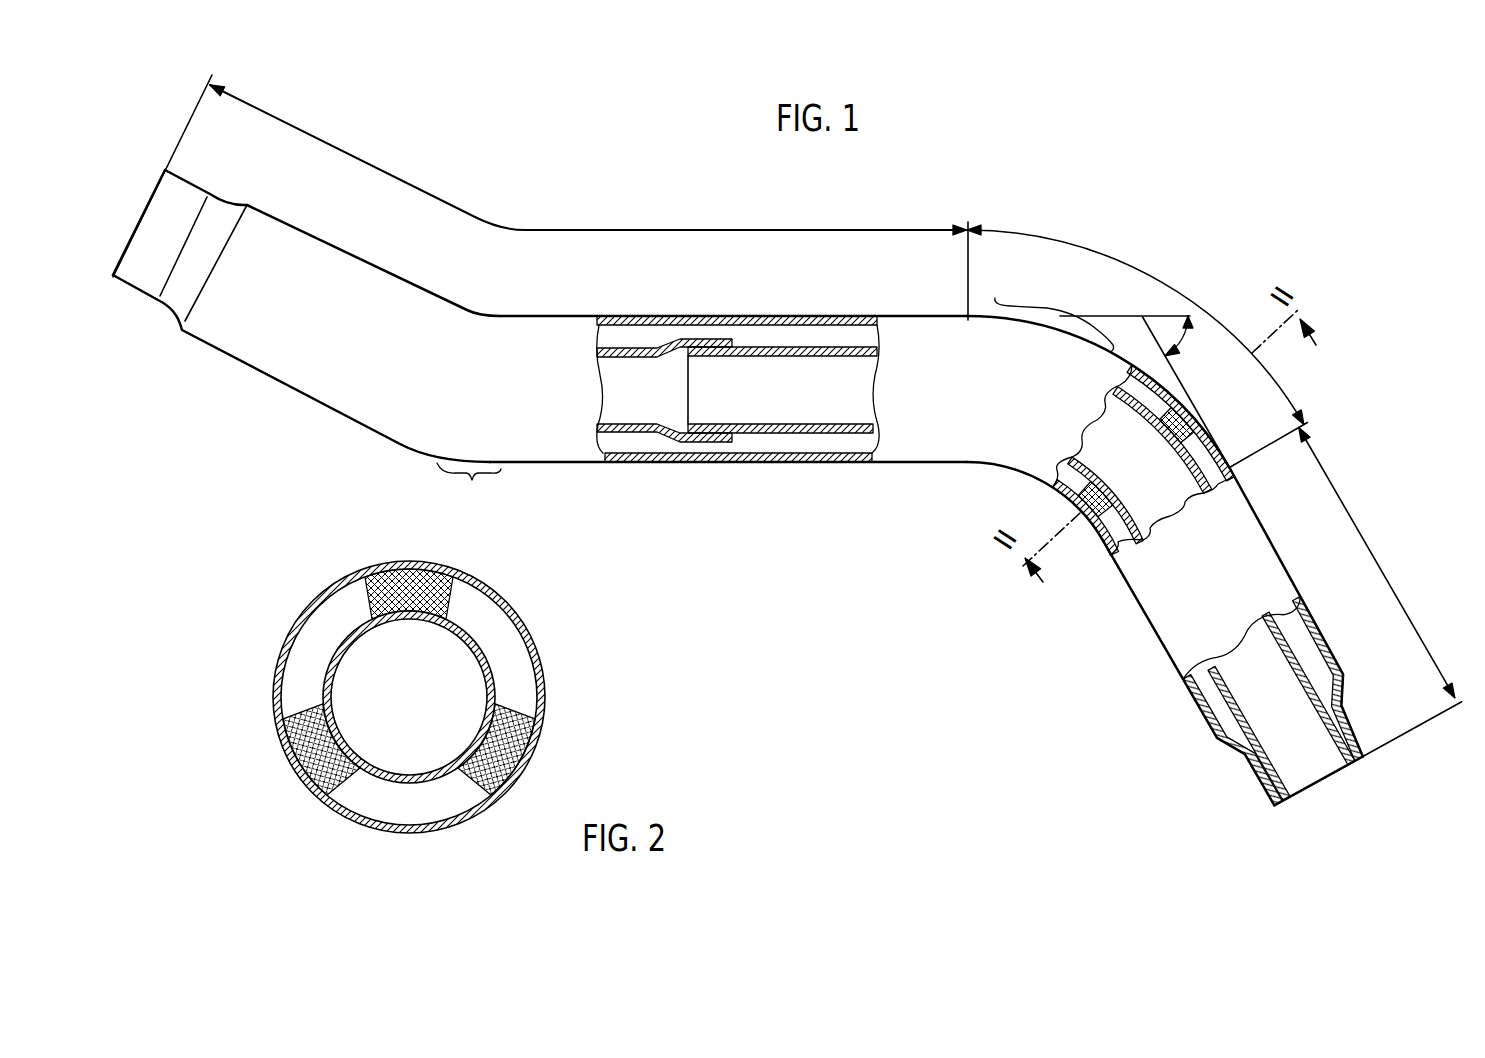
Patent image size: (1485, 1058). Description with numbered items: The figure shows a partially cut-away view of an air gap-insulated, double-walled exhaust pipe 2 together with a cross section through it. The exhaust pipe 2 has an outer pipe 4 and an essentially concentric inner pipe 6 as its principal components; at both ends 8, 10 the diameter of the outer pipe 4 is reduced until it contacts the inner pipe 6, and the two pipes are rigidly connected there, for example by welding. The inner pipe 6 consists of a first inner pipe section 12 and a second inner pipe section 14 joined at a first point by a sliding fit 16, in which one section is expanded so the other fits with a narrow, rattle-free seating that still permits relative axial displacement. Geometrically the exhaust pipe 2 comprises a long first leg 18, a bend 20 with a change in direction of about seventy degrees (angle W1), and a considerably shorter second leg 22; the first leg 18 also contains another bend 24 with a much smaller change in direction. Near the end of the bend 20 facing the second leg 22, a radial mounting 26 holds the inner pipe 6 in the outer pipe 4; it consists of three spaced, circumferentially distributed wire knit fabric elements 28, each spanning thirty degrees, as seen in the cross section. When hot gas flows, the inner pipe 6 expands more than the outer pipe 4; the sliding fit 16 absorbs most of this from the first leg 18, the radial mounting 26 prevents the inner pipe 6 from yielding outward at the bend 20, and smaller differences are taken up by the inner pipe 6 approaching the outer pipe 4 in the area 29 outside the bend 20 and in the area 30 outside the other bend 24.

In FIG. 1, the exhaust pipe 2 is at (918, 283).
In FIG. 1, the outer pipe 4 is at (800, 316).
In FIG. 2, the outer pipe 4 is at (543, 661).
In FIG. 1, the inner pipe 6 is at (841, 448).
In FIG. 2, the inner pipe 6 is at (480, 648).
In FIG. 1, the exhaust pipe end 8 is at (200, 170).
In FIG. 1, the exhaust pipe end 10 is at (1249, 795).
In FIG. 1, the first inner pipe section 12 is at (627, 434).
In FIG. 1, the second inner pipe section 14 is at (767, 434).
In FIG. 1, the sliding fit 16 is at (696, 327).
In FIG. 1, the first leg 18 is at (724, 230).
In FIG. 1, the bend 20 is at (1153, 277).
In FIG. 1, the second leg 22 is at (1374, 558).
In FIG. 1, the other bend 24 is at (418, 452).
In FIG. 1, the radial mounting 26 is at (1079, 528).
In FIG. 2, the radial mounting 26 is at (415, 810).
In FIG. 1, the wire knit fabric element 28 is at (1180, 425).
In FIG. 2, the wire knit fabric element 28 is at (533, 754).
In FIG. 1, the area of the outside of the bend 29 is at (1049, 306).
In FIG. 1, the area of the outside of the other bend 30 is at (472, 480).
In FIG. 1, the angle W1 is at (1186, 338).